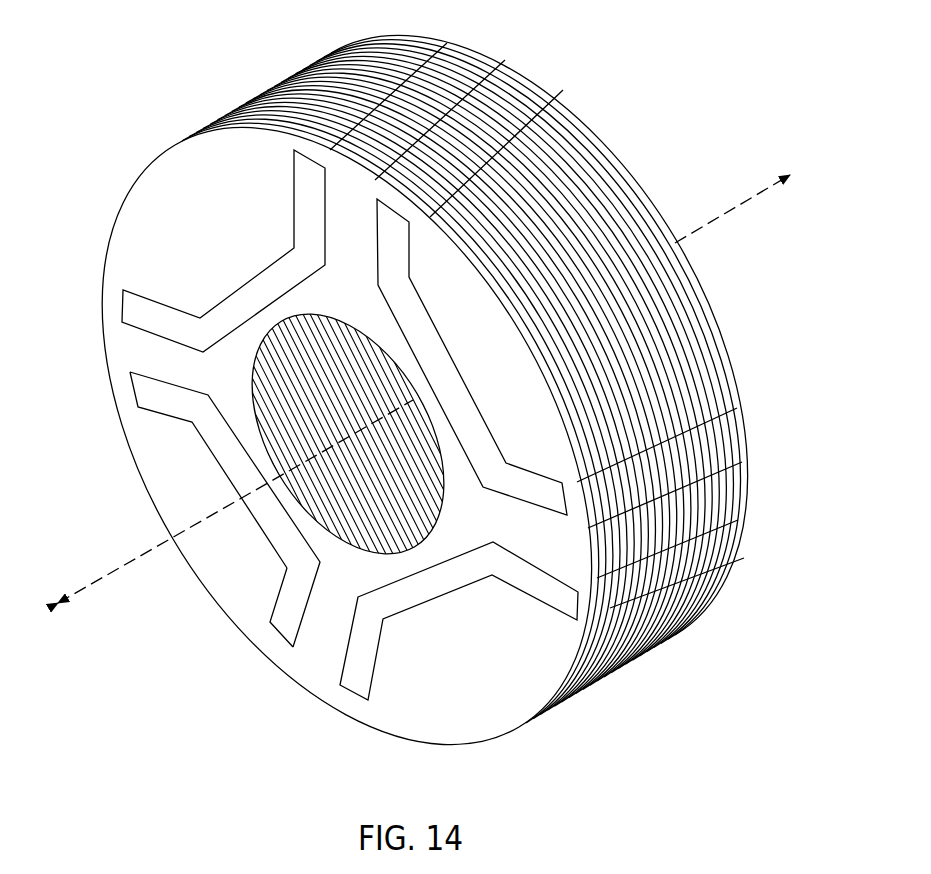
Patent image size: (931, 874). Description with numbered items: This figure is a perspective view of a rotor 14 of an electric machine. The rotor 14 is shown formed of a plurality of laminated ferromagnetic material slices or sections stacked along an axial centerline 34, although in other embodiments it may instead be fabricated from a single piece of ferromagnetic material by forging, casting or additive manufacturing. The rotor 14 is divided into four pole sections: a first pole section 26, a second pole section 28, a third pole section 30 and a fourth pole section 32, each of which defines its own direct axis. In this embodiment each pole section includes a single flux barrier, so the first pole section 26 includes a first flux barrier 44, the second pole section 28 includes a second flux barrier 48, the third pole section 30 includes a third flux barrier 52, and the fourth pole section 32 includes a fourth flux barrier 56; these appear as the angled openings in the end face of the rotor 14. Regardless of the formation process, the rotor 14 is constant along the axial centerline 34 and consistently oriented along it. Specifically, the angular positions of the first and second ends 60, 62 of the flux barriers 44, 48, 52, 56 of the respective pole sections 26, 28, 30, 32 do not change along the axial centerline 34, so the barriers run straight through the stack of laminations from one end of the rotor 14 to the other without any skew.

The rotor 14 is at (419, 394).
The first pole section 26 is at (183, 160).
The second pole section 28 is at (533, 408).
The third pole section 30 is at (511, 706).
The fourth pole section 32 is at (162, 462).
The axial centerline 34 is at (731, 208).
The first flux barrier 44 is at (152, 319).
The second flux barrier 48 is at (453, 382).
The third flux barrier 52 is at (399, 598).
The fourth flux barrier 56 is at (284, 538).
The first end 60 is at (514, 142).
The second end 62 is at (712, 442).